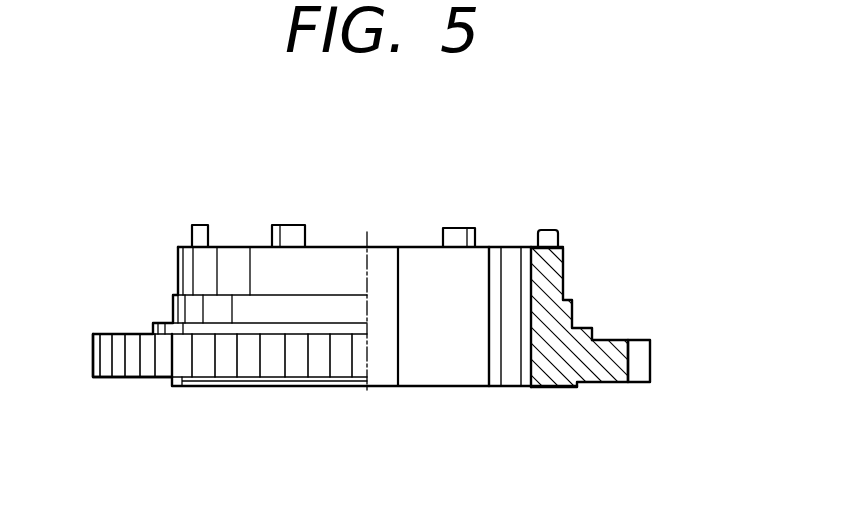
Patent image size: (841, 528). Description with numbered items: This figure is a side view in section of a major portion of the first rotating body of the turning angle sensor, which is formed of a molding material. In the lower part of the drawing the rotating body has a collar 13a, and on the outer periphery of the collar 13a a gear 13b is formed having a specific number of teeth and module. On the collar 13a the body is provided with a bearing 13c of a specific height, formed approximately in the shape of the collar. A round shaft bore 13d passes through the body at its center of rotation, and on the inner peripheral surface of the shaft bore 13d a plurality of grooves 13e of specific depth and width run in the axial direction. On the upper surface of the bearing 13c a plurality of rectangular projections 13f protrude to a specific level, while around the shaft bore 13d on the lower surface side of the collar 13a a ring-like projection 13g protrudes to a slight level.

The collar 13a is at (610, 385).
The gear 13b is at (93, 353).
The bearing 13c is at (565, 267).
The shaft bore 13d is at (433, 370).
The grooves 13e is at (513, 248).
The rectangular projections 13f is at (443, 228).
The ring-like projection 13g is at (285, 387).